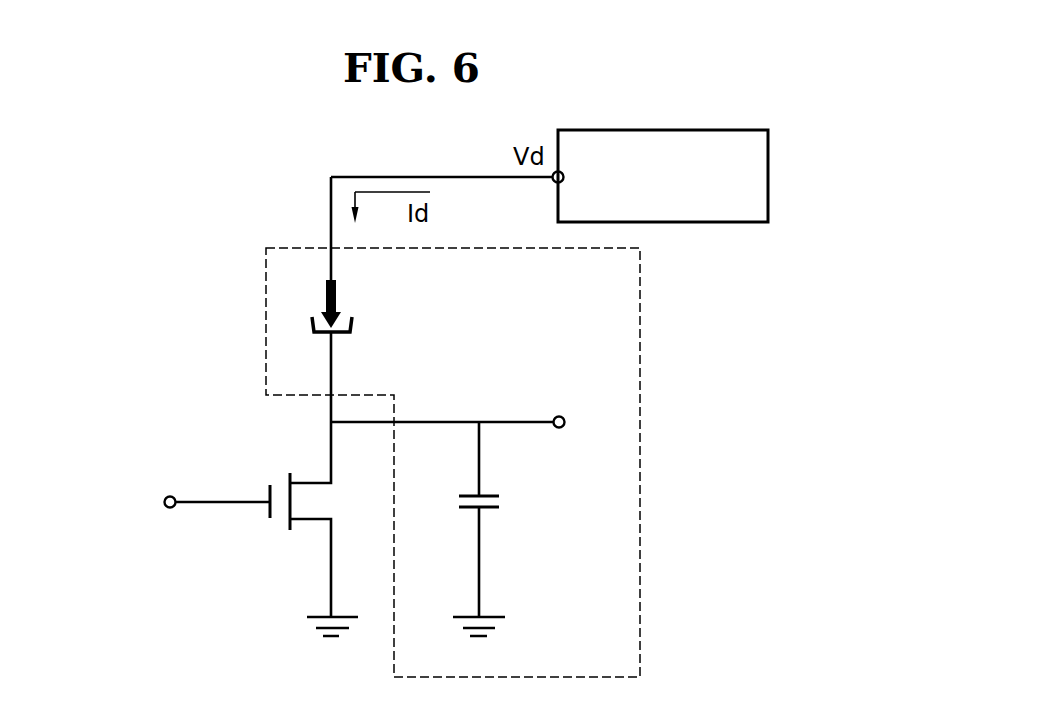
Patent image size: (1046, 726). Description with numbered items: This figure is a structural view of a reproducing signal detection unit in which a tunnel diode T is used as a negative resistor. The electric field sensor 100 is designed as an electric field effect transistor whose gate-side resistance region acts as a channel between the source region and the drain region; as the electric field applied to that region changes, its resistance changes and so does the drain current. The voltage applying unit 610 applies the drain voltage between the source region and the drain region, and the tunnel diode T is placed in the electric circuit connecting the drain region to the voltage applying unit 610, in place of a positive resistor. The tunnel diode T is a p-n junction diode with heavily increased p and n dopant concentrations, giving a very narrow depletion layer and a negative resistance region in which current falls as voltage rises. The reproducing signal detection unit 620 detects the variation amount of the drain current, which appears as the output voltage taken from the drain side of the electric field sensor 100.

The voltage applying unit 610 is at (768, 178).
The reproducing signal detection unit 620 is at (505, 462).
The electric field sensor 100 is at (252, 462).
The tunnel diode T is at (343, 302).